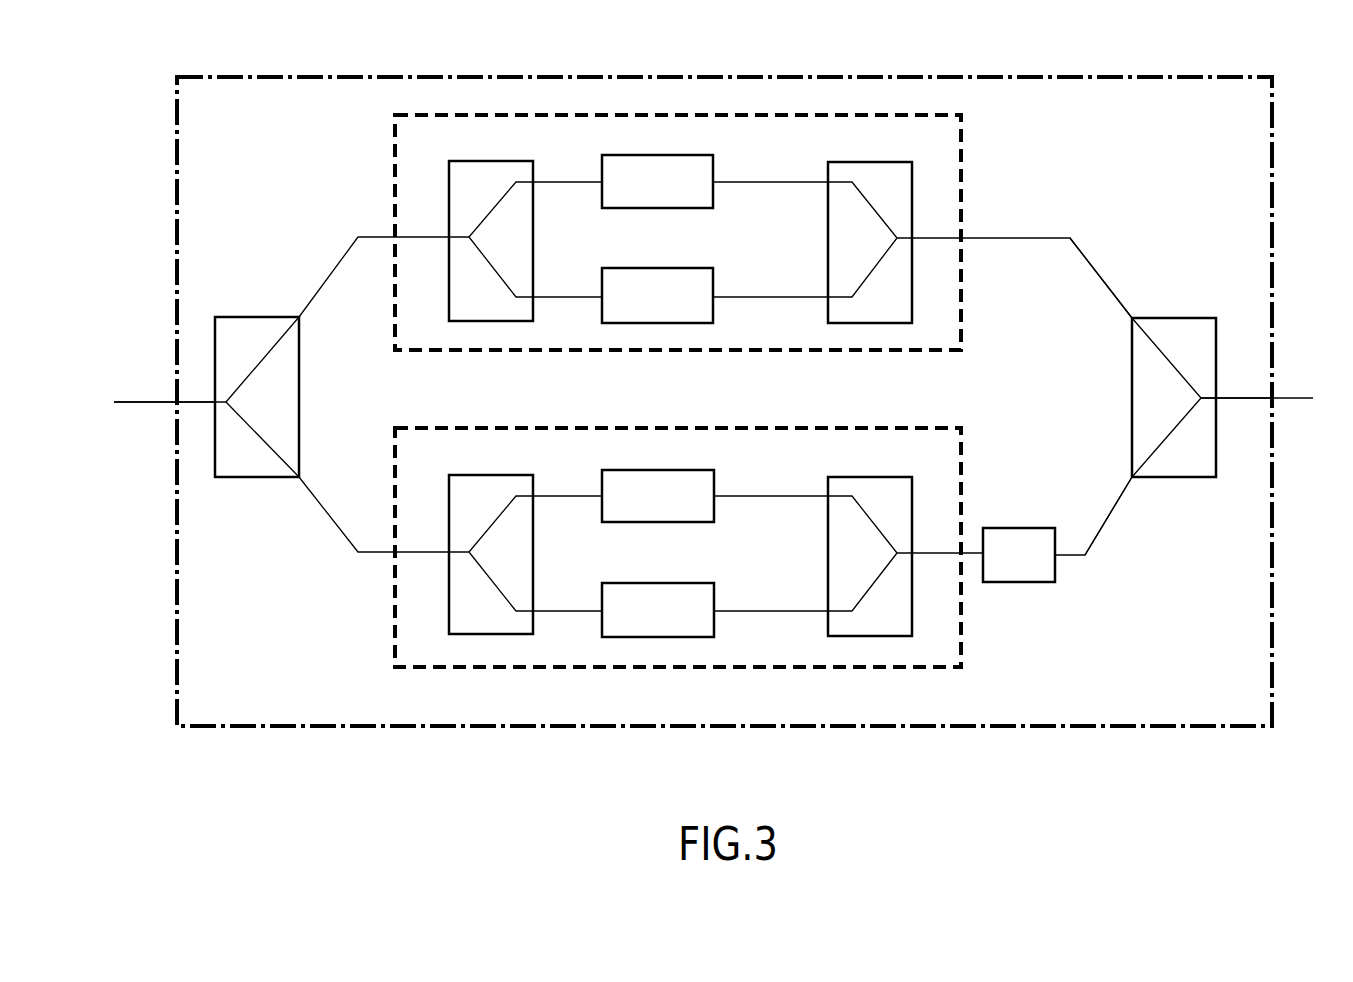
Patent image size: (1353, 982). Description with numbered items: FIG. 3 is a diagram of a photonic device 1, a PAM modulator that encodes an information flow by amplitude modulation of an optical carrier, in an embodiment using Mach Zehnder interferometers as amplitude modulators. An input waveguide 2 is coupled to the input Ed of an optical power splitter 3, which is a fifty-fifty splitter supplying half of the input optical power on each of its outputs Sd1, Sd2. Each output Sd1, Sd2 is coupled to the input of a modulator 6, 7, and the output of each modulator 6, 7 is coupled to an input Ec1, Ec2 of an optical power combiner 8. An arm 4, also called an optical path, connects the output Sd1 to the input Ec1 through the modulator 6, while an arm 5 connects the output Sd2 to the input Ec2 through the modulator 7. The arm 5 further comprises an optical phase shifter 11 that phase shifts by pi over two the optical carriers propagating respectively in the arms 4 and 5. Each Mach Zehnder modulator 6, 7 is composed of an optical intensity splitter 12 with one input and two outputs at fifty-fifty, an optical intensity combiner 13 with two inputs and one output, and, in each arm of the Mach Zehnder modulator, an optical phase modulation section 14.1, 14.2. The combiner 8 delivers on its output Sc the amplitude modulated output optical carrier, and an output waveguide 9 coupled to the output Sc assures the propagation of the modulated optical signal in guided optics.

The photonic device 1 is at (1222, 77).
The input waveguide 2 is at (198, 404).
The optical power splitter 3 is at (255, 478).
The arm 4 is at (1055, 240).
The arm 5 is at (1065, 557).
The modulator 6 is at (962, 158).
The modulator 7 is at (962, 490).
The optical power combiner 8 is at (1217, 343).
The output waveguide 9 is at (1295, 400).
The optical phase shifter 11 is at (1003, 577).
The optical intensity splitter 12 is at (487, 166).
The optical intensity combiner 13 is at (857, 168).
The optical phase modulation section 14.1 is at (661, 165).
The optical phase modulation section 14.2 is at (680, 270).
The input Ed is at (214, 402).
The output Sd1 is at (294, 317).
The output Sd2 is at (292, 478).
The input Ec1 is at (1134, 318).
The input Ec2 is at (1137, 478).
The output Sc is at (1217, 400).